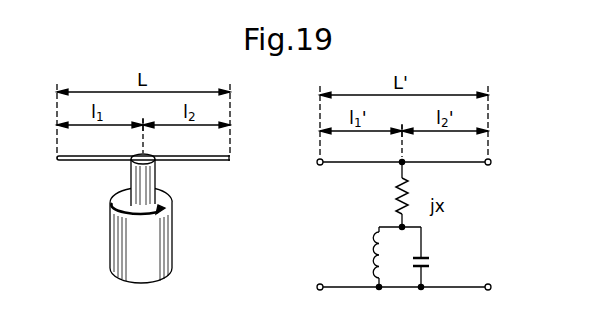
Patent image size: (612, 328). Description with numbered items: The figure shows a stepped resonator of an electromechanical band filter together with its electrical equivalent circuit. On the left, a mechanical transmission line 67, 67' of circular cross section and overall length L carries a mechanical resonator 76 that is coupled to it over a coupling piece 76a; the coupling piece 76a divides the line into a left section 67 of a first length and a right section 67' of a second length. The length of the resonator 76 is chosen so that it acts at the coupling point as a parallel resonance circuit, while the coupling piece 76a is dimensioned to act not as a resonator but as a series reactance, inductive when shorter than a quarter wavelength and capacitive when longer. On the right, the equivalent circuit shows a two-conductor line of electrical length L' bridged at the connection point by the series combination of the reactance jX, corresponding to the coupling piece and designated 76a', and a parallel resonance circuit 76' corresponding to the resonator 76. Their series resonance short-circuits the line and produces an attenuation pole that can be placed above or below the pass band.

The mechanical transmission line section 67 is at (143, 175).
The mechanical transmission line section 67' is at (243, 176).
The coupling piece 76a is at (174, 180).
The mechanical resonator 76 is at (158, 236).
The reactance jX 76a' is at (377, 202).
The parallel resonance circuit 76' is at (401, 274).